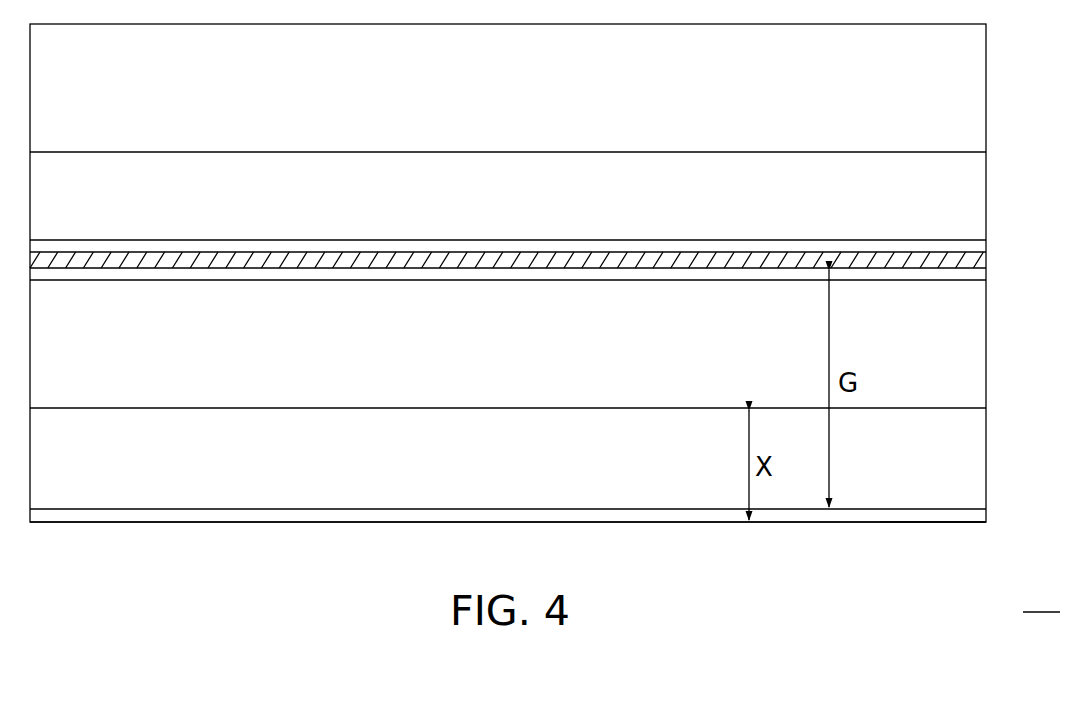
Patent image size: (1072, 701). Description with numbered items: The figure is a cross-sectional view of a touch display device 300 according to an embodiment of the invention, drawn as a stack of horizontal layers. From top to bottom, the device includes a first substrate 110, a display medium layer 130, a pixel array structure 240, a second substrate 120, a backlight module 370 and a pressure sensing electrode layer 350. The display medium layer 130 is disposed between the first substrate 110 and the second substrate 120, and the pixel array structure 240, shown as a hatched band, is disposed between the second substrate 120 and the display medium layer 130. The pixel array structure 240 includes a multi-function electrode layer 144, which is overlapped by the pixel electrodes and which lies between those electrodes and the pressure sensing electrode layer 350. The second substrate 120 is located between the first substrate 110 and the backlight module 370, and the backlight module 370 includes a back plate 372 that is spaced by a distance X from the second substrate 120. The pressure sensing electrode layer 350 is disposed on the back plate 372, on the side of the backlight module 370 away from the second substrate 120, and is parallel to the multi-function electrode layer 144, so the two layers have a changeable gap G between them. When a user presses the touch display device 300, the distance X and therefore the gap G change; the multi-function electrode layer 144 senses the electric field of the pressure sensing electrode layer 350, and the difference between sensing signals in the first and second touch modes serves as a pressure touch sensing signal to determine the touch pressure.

The first substrate 110 is at (978, 93).
The display medium layer 130 is at (978, 200).
The pixel array structure 240 is at (997, 240).
The multi-function electrode layer 144 is at (953, 258).
The second substrate 120 is at (978, 343).
The backlight module 370 is at (978, 464).
The pressure sensing electrode layer 350 is at (978, 518).
The back plate 372 is at (912, 524).
The touch display device 300 is at (545, 320).